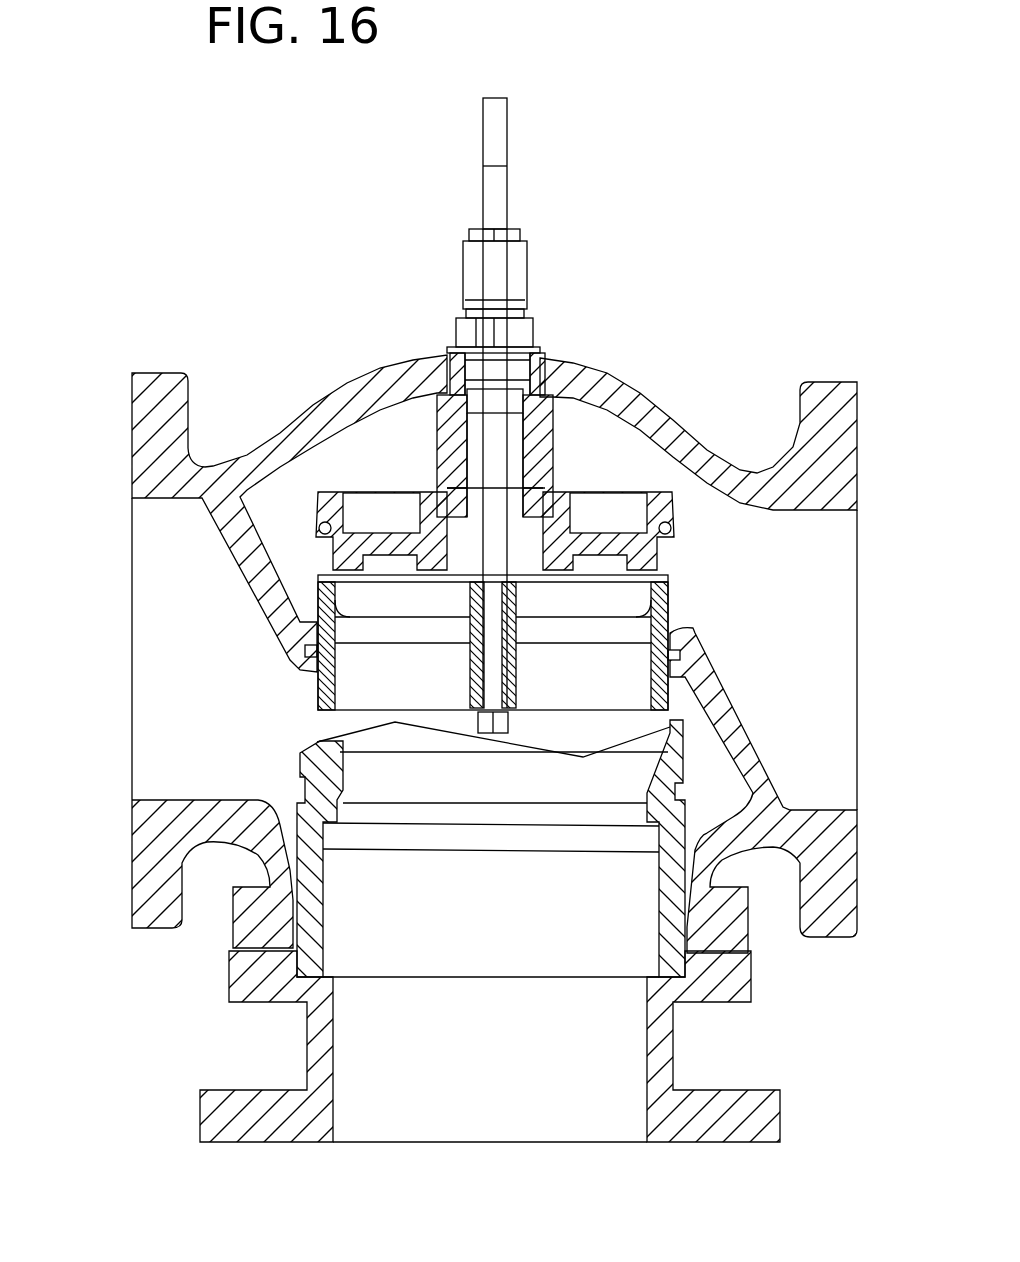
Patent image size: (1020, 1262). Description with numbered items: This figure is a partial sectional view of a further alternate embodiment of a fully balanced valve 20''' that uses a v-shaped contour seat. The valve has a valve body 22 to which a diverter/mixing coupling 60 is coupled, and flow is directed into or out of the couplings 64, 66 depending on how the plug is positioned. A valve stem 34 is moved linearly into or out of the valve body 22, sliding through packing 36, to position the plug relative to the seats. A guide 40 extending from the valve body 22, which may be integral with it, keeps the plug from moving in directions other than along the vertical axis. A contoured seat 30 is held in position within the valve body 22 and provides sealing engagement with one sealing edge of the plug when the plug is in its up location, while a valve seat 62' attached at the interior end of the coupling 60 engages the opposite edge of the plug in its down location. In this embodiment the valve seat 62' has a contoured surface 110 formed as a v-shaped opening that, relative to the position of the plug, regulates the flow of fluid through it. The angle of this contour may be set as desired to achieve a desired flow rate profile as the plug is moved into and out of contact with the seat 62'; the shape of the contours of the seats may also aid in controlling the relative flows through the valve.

The fully balanced valve 20''' is at (479, 618).
The valve body 22 is at (618, 388).
The contoured seat 30 is at (553, 460).
The valve stem 34 is at (510, 104).
The packing 36 is at (528, 249).
The guide 40 is at (290, 637).
The diverter/mixing coupling 60 is at (690, 1148).
The valve seat 62' is at (360, 848).
The coupling 64 is at (130, 519).
The coupling 66 is at (858, 548).
The contoured surface 110 is at (335, 730).